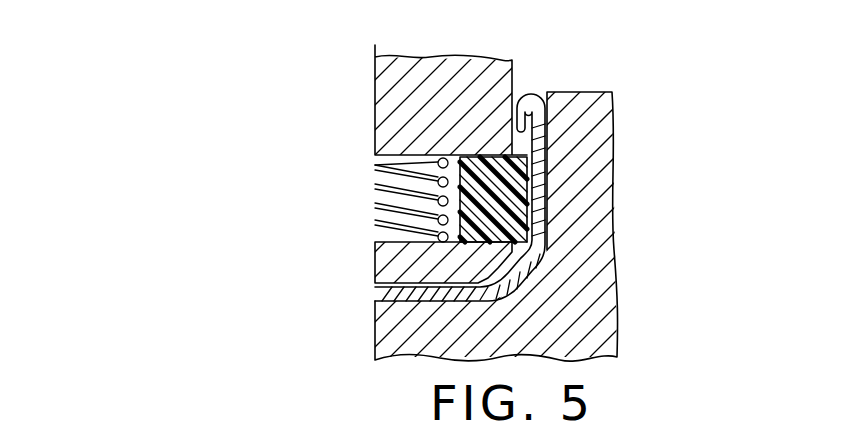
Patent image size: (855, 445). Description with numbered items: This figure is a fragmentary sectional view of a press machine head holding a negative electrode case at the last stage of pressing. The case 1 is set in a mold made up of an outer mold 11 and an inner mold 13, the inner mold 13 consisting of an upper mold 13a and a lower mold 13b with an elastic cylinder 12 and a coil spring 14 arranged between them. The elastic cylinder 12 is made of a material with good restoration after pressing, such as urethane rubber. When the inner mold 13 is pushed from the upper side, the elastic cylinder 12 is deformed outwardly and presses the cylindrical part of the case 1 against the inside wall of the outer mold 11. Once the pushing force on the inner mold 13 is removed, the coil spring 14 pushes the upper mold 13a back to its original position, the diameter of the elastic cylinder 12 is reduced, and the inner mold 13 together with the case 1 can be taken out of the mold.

The case 1 is at (541, 138).
The outer mold 11 is at (600, 297).
The elastic cylinder 12 is at (517, 180).
The inner mold 13 is at (383, 164).
The upper mold 13a is at (375, 130).
The lower mold 13b is at (379, 257).
The coil spring 14 is at (444, 158).